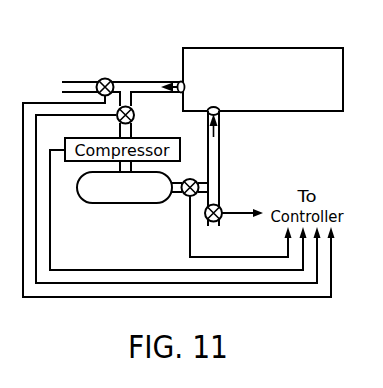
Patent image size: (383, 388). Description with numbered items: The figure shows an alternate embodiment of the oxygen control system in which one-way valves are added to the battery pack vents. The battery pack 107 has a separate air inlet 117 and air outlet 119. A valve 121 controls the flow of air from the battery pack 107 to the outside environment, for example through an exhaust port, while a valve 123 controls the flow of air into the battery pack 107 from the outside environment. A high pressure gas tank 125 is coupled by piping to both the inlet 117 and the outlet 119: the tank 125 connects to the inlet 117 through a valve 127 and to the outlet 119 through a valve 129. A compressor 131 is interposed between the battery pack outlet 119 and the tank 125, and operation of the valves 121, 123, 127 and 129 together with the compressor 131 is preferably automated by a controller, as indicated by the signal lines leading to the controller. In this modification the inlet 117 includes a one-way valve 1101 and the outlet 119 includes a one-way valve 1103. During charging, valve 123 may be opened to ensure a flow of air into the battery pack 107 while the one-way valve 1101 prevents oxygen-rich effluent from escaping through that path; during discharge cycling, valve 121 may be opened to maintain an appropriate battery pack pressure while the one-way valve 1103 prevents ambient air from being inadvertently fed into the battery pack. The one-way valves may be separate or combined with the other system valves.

The battery pack 107 is at (276, 48).
The air inlet 117 is at (213, 98).
The air outlet 119 is at (188, 72).
The valve 121 is at (102, 78).
The valve 123 is at (223, 208).
The high pressure gas tank 125 is at (125, 203).
The valve 127 is at (184, 199).
The valve 129 is at (133, 123).
The compressor 131 is at (146, 136).
The one-way valve 1101 is at (221, 114).
The one-way valve 1103 is at (181, 81).